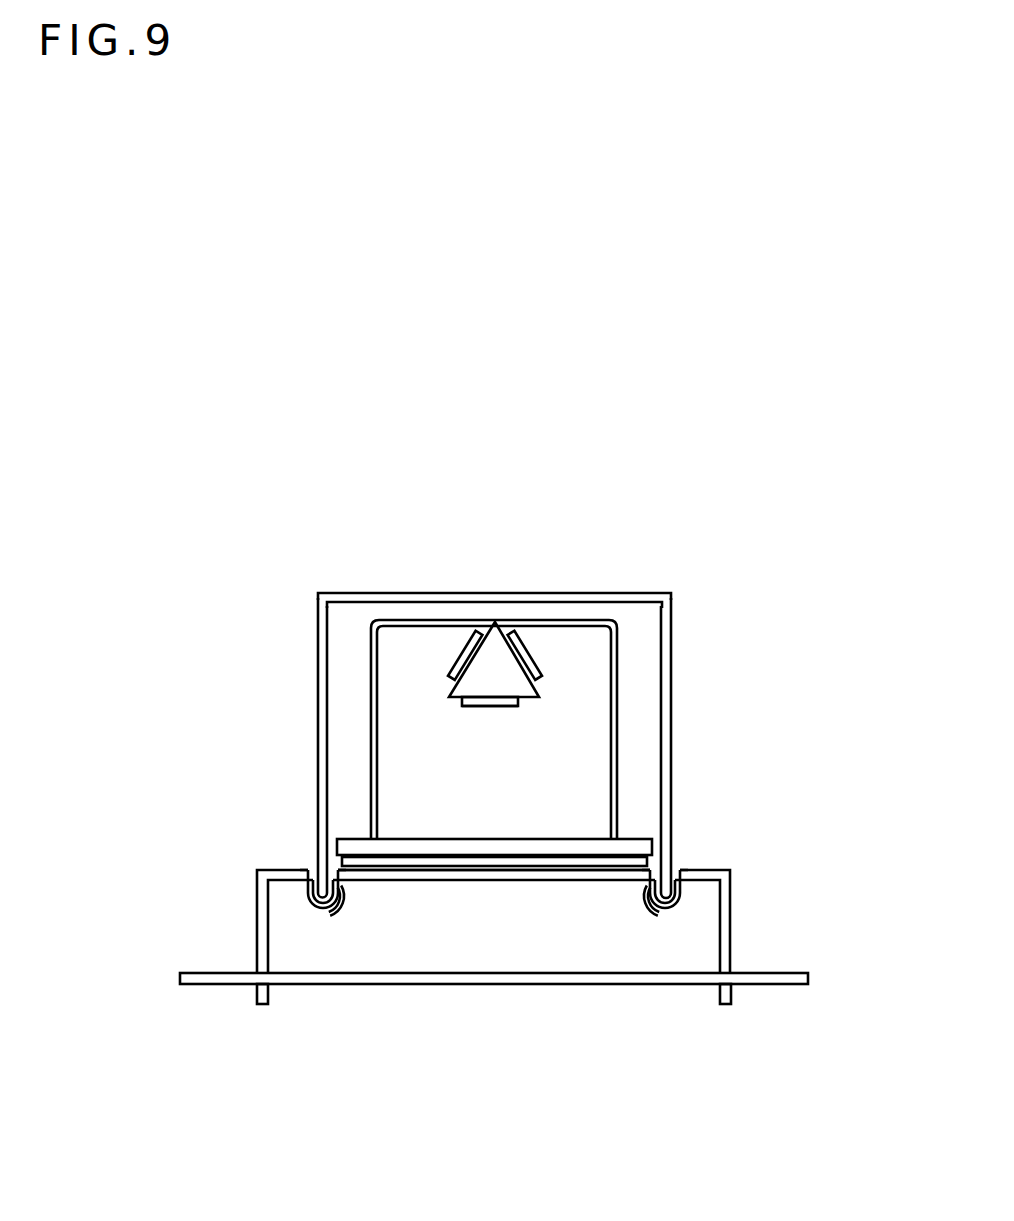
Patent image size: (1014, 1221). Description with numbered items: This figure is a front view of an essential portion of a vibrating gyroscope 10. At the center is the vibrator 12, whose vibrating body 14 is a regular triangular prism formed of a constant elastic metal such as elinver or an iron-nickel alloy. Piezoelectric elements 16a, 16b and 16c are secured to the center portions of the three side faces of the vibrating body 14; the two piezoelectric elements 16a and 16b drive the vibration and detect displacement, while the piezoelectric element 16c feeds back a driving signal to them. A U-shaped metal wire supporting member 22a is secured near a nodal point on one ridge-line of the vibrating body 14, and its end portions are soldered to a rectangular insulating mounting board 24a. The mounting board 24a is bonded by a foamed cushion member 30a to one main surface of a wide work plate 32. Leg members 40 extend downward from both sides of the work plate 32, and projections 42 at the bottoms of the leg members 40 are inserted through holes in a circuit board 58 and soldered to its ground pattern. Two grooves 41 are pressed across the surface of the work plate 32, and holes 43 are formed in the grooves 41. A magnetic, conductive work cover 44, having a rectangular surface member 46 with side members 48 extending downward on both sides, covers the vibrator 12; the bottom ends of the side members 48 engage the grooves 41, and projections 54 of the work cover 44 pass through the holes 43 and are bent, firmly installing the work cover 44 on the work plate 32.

The vibrating gyroscope 10 is at (763, 342).
The vibrator 12 is at (525, 713).
The vibrating body 14 is at (495, 700).
The piezoelectric element 16a is at (465, 652).
The piezoelectric element 16b is at (525, 652).
The piezoelectric element 16c is at (478, 706).
The supporting member 22a is at (620, 705).
The mounting board 24a is at (655, 845).
The cushion member 30a is at (684, 863).
The work plate 32 is at (470, 870).
The leg member 40 is at (262, 905).
The groove 41 is at (311, 864).
The projection 42 is at (262, 990).
The hole 43 is at (308, 914).
The work cover 44 is at (486, 688).
The surface member 46 is at (418, 597).
The side member 48 is at (318, 615).
The projection 54 is at (334, 910).
The circuit board 58 is at (553, 980).